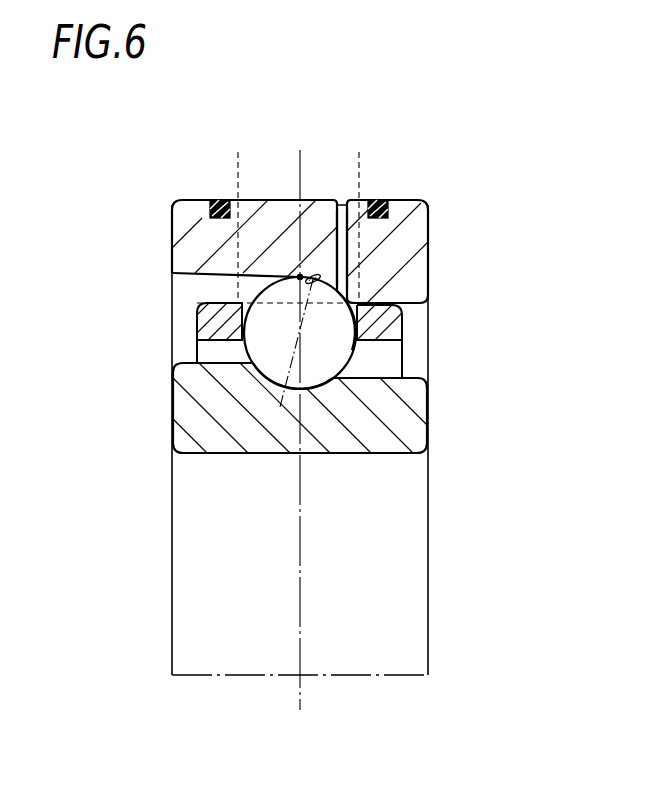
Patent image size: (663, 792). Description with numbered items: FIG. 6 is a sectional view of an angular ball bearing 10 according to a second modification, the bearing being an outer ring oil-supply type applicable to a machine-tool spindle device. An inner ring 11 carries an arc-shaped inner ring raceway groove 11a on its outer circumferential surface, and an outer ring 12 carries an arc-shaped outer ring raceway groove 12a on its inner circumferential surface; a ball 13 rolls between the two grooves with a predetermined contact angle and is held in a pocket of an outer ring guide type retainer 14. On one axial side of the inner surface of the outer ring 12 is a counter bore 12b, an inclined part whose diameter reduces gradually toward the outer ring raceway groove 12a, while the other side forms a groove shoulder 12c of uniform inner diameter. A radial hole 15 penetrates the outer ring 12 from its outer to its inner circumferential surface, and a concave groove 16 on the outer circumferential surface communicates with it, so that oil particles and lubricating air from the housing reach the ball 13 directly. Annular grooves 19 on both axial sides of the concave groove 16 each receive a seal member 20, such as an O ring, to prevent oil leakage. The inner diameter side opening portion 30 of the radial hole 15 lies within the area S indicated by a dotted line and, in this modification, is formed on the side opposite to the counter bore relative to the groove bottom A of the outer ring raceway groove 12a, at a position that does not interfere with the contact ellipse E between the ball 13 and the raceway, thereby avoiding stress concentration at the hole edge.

The angular ball bearing 10 is at (420, 172).
The inner ring 11 is at (193, 417).
The inner ring raceway groove 11a is at (336, 374).
The outer ring 12 is at (193, 237).
The outer ring raceway groove 12a is at (350, 350).
The counter bore 12b is at (193, 285).
The groove shoulder 12c is at (385, 293).
The ball 13 is at (273, 350).
The retainer 14 is at (207, 322).
The radial hole 15 is at (304, 274).
The concave groove 16 is at (343, 205).
The annular groove 19 is at (219, 200).
The seal member 20 is at (378, 200).
The inner diameter side opening portion 30 is at (358, 318).
The groove bottom A is at (298, 276).
The contact ellipse E is at (315, 275).
The area S is at (360, 175).